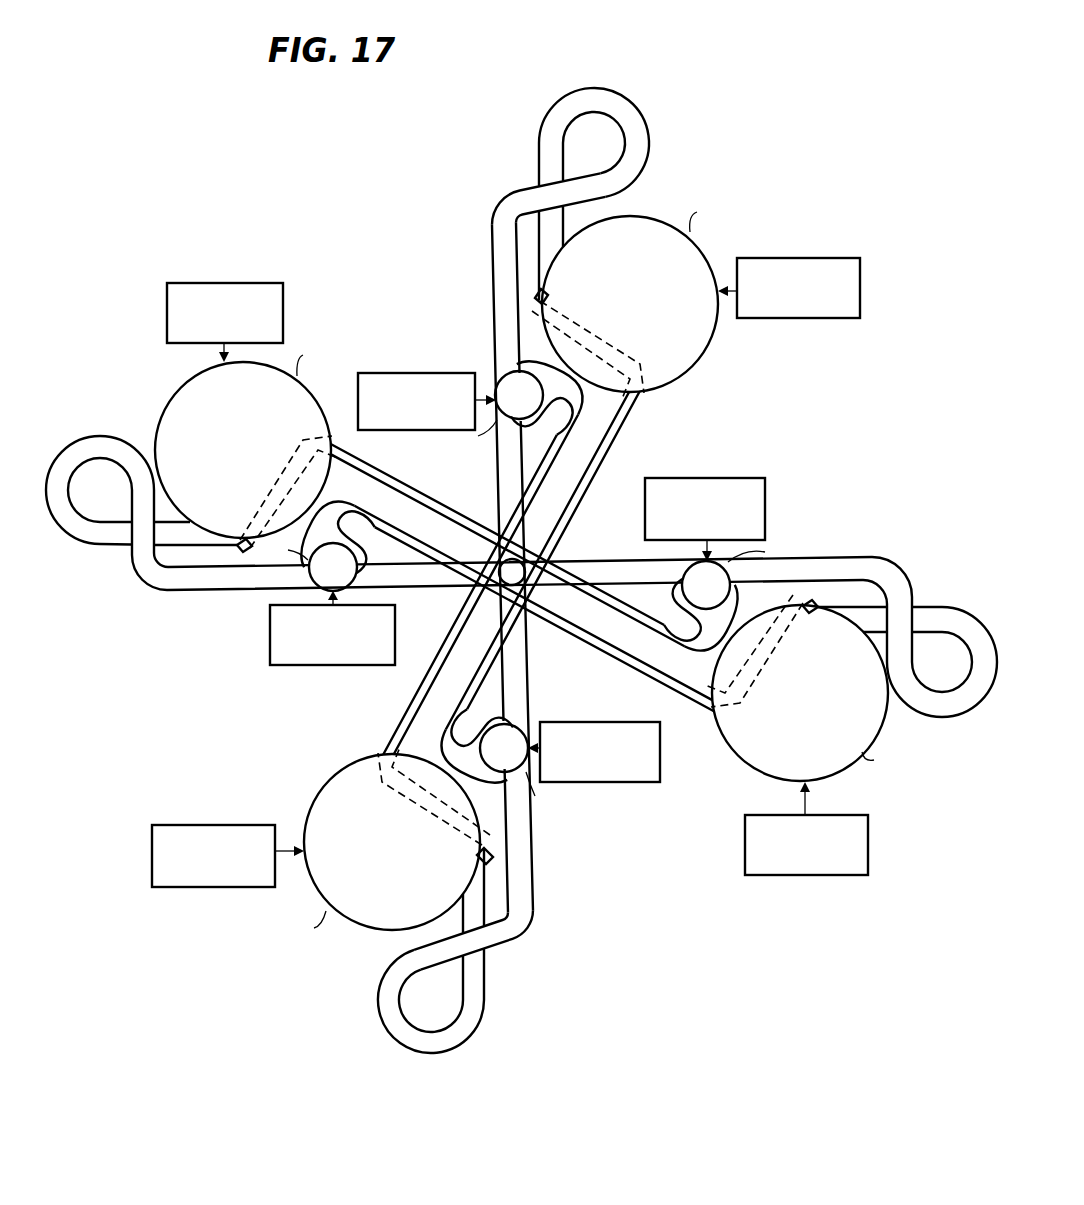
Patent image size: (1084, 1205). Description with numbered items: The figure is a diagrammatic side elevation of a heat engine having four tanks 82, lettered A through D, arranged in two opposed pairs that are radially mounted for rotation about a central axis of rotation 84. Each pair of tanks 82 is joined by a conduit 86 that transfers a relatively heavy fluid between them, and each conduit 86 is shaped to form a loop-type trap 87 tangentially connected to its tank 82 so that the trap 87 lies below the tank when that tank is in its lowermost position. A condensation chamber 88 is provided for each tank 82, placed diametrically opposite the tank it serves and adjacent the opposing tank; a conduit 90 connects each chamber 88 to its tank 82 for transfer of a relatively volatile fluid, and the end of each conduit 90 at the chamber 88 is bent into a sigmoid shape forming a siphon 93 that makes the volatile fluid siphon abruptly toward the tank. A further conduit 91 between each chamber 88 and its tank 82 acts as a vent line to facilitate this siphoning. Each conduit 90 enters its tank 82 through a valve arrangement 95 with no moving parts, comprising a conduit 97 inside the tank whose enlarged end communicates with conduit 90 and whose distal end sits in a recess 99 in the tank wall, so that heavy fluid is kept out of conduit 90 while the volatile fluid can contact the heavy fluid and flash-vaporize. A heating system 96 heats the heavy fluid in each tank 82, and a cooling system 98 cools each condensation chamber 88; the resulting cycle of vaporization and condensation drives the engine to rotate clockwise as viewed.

The tank 82 is at (255, 399).
The axis of rotation 84 is at (507, 566).
The conduit 86 is at (815, 557).
The loop-type trap 87 is at (646, 128).
The condensation chamber 88 is at (533, 407).
The conduit 90 is at (412, 482).
The conduit 91 is at (578, 400).
The siphon 93 is at (548, 462).
The valve arrangement 95 is at (268, 479).
The heating system 96 is at (281, 283).
The conduit 97 is at (247, 522).
The cooling system 98 is at (437, 373).
The recess 99 is at (537, 297).